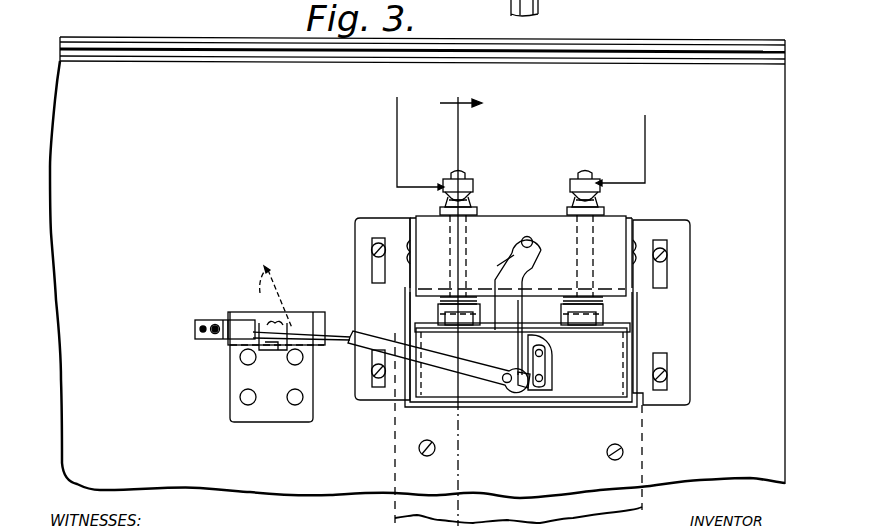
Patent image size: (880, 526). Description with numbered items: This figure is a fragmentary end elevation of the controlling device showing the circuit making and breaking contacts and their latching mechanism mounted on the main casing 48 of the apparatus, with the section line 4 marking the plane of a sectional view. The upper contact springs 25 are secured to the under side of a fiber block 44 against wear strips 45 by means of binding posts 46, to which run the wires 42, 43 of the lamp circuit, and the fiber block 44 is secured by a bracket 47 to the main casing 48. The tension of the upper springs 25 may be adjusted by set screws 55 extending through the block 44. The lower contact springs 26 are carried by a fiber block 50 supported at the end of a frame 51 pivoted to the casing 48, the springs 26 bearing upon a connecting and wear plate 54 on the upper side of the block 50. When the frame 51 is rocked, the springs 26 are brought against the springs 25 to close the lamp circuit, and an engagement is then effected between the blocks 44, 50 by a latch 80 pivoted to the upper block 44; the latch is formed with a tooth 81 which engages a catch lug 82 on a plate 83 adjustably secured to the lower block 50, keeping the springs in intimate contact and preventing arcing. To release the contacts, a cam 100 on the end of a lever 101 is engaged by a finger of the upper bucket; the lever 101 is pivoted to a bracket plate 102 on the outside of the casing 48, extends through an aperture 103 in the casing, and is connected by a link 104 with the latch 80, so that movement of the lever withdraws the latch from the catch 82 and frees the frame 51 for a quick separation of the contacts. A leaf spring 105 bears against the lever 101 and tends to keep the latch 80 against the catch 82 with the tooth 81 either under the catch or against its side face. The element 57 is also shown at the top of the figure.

The section line 4- 4 is at (461, 237).
The contact springs 25 is at (573, 296).
The contact springs 26 is at (603, 317).
The wire 42 is at (397, 122).
The wire 43 is at (648, 131).
The fiber block 44 is at (612, 246).
The wear strips 45 is at (597, 296).
The binding posts 46 is at (576, 184).
The bracket 47 is at (690, 258).
The main casing 48 is at (752, 90).
The fiber block 50 is at (600, 414).
The frame 51 is at (618, 345).
The connecting and wear plate 54 is at (528, 324).
The set screws 55 is at (580, 202).
The conduit 57 is at (548, 6).
The latch 80 is at (505, 308).
The tooth 81 is at (524, 377).
The catch lug 82 is at (521, 385).
The plate 83 is at (553, 353).
The cam 100 is at (266, 290).
The lever 101 is at (292, 328).
The bracket plate 102 is at (248, 360).
The aperture 103 is at (315, 327).
The link 104 is at (440, 366).
The leaf spring 105 is at (232, 327).